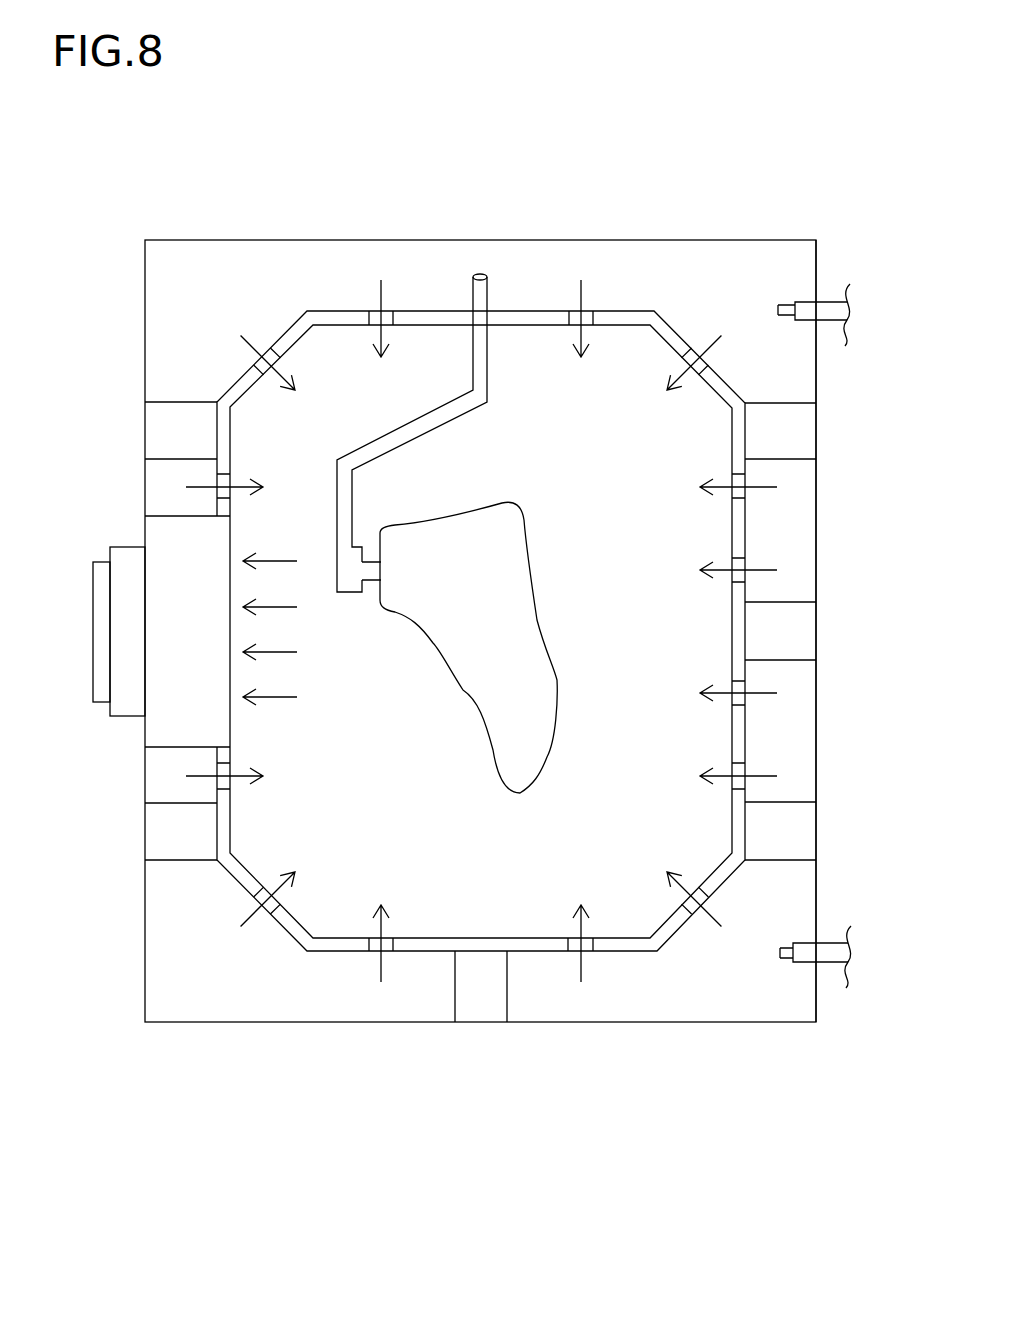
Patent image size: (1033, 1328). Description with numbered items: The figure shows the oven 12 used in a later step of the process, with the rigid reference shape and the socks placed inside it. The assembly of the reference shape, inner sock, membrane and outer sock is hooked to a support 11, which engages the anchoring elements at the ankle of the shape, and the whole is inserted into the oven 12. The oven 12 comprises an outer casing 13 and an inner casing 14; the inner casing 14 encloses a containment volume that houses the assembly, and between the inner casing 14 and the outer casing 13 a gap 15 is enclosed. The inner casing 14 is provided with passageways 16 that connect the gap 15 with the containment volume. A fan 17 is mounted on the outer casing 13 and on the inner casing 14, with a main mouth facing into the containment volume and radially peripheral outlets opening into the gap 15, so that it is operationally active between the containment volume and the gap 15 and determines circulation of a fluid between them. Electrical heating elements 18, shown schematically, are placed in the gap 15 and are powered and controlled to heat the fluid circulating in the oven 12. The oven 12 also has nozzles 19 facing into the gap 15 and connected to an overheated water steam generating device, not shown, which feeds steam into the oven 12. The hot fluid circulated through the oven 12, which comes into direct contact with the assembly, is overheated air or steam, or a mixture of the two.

The support 11 is at (490, 355).
The oven 12 is at (781, 200).
The outer casing 13 is at (818, 479).
The inner casing 14 is at (747, 541).
The gap 15 is at (253, 285).
The passageways 16 is at (381, 311).
The fan 17 is at (172, 756).
The electrical heating elements 18 is at (180, 432).
The nozzles 19 is at (812, 307).